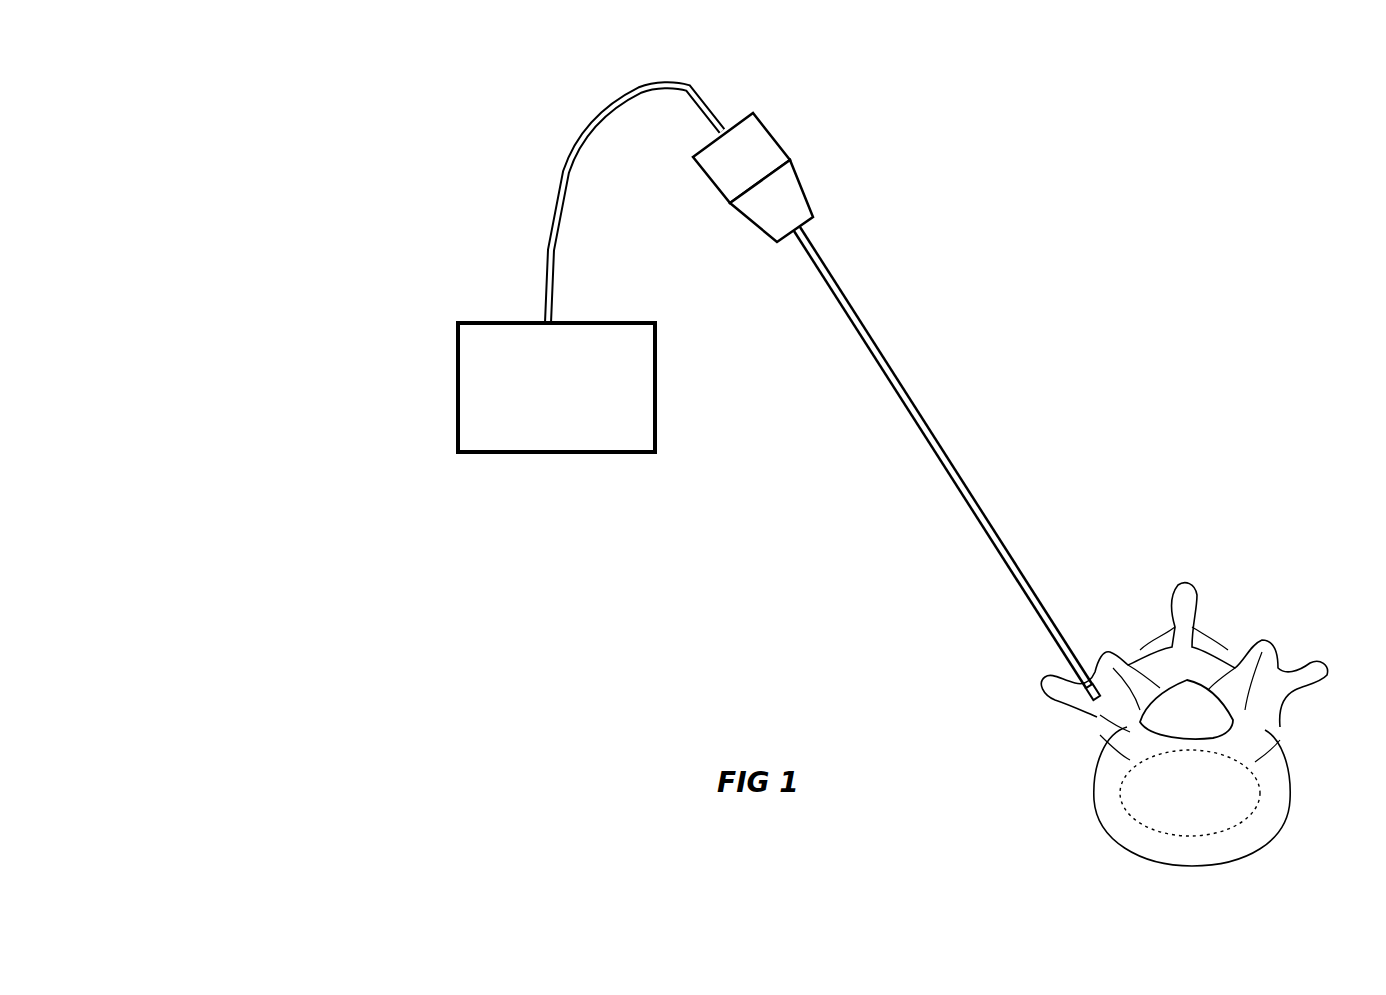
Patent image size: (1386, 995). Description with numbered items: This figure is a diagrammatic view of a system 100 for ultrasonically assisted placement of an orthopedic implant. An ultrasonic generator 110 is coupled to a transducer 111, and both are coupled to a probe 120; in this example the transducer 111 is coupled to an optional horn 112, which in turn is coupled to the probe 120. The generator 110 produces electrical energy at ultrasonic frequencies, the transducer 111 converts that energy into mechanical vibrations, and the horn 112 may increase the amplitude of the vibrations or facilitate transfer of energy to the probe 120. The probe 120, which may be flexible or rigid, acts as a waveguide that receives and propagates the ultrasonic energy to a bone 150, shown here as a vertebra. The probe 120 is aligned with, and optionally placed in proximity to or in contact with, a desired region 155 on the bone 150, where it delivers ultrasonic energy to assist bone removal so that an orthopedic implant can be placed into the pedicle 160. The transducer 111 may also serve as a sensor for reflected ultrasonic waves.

The system 100 is at (226, 45).
The ultrasonic generator 110 is at (668, 415).
The transducer 111 is at (758, 112).
The horn 112 is at (742, 223).
The probe 120 is at (822, 257).
The bone 150 is at (1218, 598).
The desired region 155 is at (1085, 692).
The pedicle 160 is at (1125, 727).